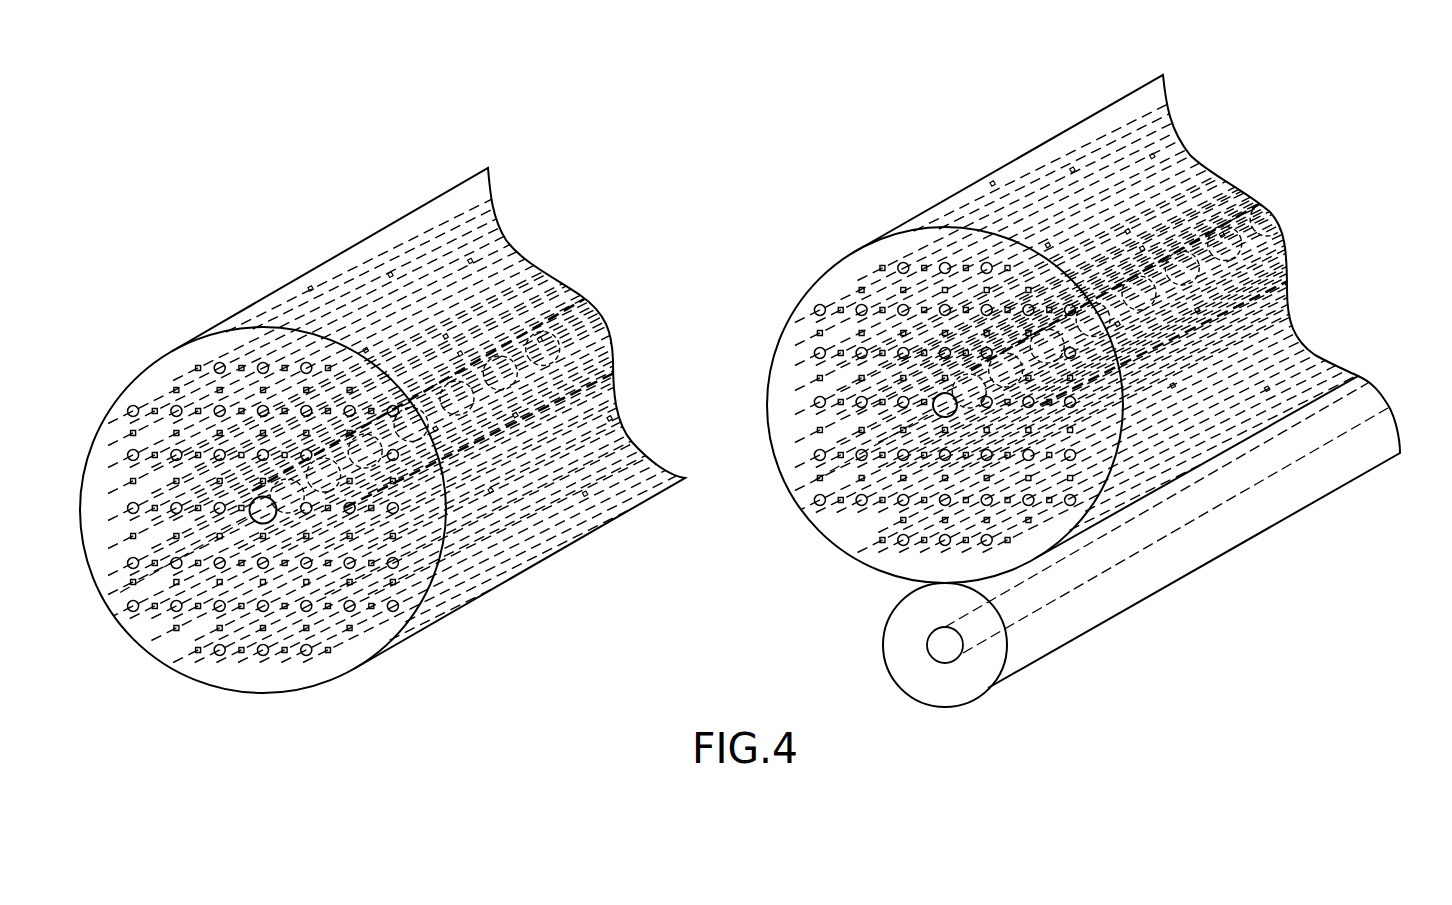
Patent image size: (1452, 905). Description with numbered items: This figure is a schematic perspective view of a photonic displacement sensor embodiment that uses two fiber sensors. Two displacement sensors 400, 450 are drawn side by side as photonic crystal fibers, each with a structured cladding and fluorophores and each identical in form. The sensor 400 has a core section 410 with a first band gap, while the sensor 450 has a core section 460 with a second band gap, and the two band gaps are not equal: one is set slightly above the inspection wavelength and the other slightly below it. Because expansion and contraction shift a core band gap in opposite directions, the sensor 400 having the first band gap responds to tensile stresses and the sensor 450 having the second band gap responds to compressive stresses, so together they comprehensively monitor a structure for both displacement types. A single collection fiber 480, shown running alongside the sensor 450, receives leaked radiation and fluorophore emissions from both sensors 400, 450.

The displacement sensor 400 is at (408, 170).
The core section 410 is at (593, 318).
The displacement sensor 450 is at (1003, 125).
The core section 460 is at (1265, 220).
The collection fiber 480 is at (1108, 597).